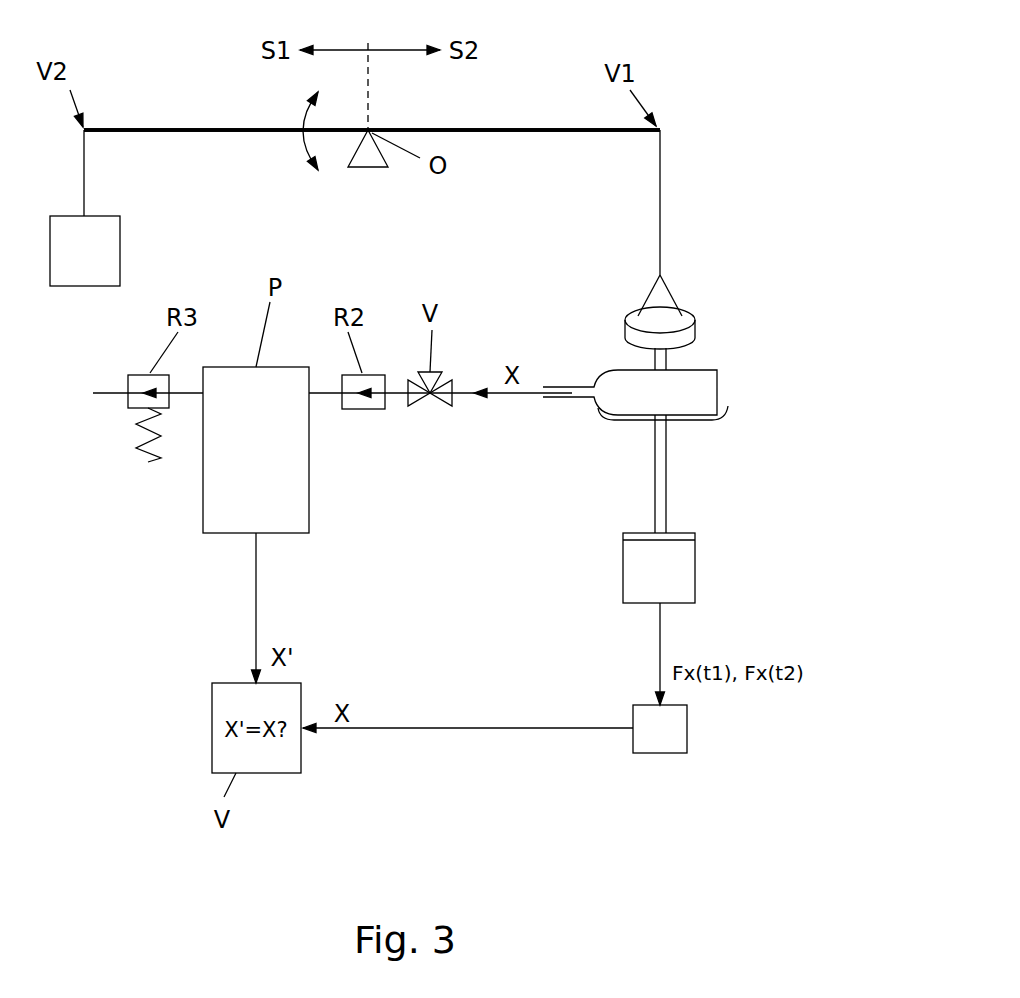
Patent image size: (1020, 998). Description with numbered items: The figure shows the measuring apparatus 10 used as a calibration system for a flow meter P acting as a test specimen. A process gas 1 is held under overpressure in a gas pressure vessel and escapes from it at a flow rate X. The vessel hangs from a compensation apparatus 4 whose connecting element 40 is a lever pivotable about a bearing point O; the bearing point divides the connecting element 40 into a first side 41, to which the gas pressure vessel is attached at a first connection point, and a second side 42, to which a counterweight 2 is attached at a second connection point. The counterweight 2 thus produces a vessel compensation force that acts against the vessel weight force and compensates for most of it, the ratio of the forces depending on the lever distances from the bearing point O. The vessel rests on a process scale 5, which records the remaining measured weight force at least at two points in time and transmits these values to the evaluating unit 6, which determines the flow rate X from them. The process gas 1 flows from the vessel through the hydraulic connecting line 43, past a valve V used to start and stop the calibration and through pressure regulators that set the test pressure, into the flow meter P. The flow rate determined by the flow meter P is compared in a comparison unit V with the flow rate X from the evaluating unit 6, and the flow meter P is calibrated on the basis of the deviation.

The process gas 1 is at (686, 395).
The counterweight 2 is at (85, 208).
The compensation apparatus 4 is at (518, 100).
The process scale 5 is at (756, 546).
The evaluating unit 6 is at (660, 678).
The measuring apparatus 10 is at (138, 658).
The connecting element 40 is at (183, 127).
The first side 41 is at (502, 133).
The second side 42 is at (220, 133).
The supply line 43 is at (510, 395).